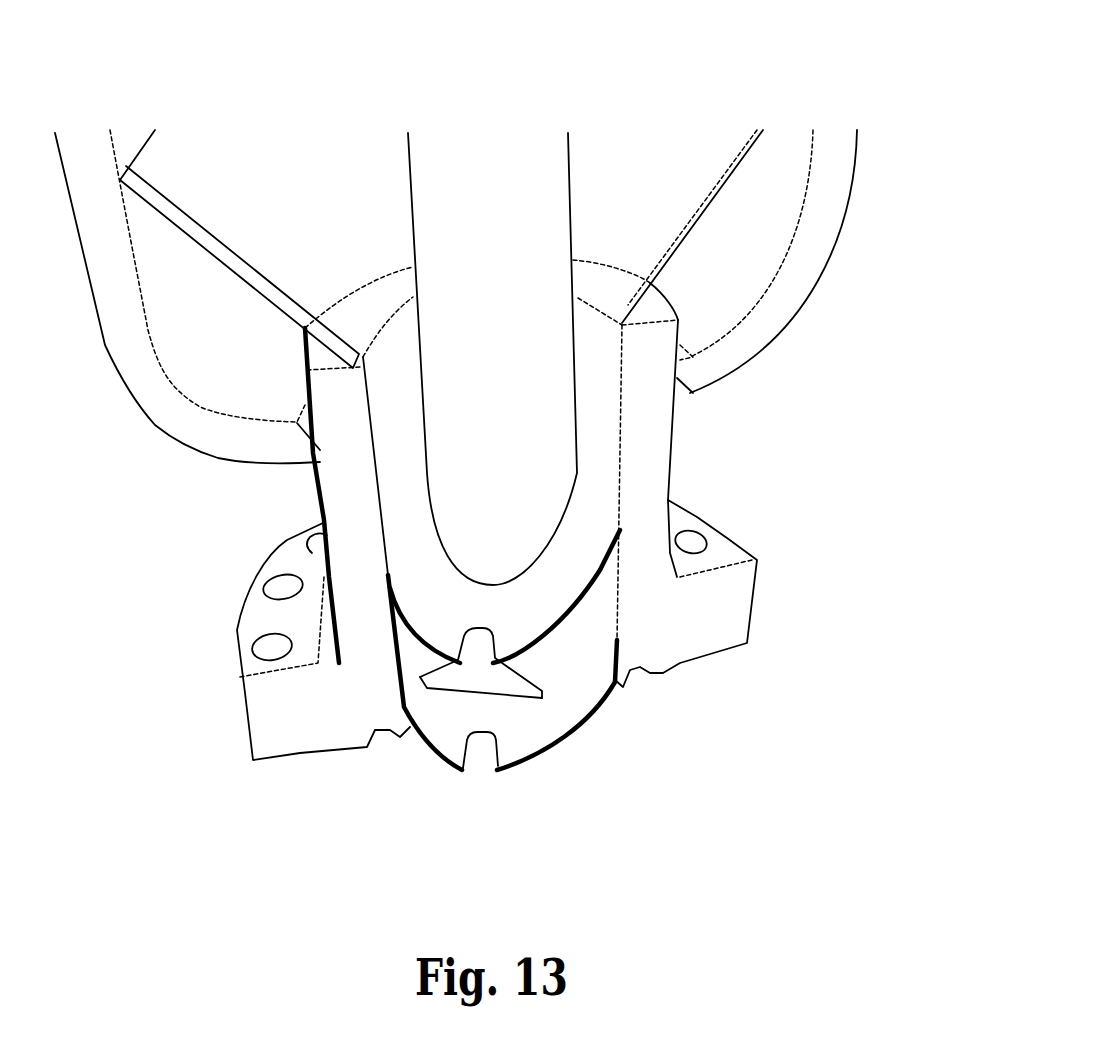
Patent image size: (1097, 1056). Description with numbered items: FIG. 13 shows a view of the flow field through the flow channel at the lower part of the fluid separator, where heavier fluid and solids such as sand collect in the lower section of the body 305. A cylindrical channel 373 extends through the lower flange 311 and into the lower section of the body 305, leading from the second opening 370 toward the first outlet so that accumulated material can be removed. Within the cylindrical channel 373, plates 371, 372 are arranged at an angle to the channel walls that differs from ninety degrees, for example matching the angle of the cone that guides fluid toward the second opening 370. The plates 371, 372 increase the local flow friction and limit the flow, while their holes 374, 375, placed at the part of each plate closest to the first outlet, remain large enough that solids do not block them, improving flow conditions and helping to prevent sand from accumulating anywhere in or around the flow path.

The body 305 is at (820, 247).
The lower flange 311 is at (757, 583).
The second opening 370 is at (548, 513).
The plate 371 is at (530, 607).
The plate 372 is at (562, 725).
The cylindrical channel 373 is at (607, 395).
The hole 374 is at (476, 648).
The hole 375 is at (480, 742).